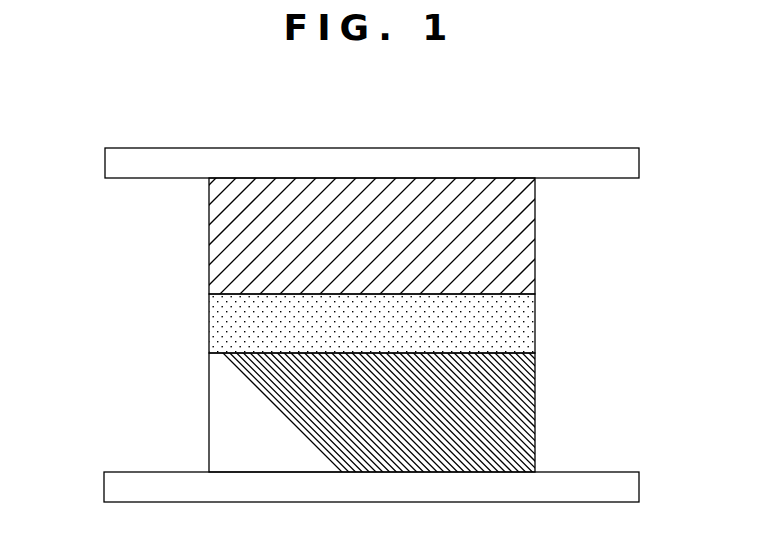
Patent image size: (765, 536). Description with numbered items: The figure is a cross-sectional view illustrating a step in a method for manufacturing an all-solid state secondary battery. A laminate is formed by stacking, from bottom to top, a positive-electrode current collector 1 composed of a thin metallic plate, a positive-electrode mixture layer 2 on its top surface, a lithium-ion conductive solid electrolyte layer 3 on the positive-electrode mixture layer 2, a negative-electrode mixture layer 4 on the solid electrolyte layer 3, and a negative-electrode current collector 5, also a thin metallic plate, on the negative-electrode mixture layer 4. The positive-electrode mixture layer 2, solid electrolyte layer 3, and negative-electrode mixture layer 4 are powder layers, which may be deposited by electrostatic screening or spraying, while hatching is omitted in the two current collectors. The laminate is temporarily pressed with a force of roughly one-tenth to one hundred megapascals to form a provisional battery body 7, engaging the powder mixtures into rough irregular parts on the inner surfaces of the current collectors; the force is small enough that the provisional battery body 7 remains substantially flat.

The positive-electrode current collector 1 is at (121, 487).
The positive-electrode mixture layer 2 is at (515, 413).
The solid electrolyte layer 3 is at (222, 324).
The negative-electrode mixture layer 4 is at (510, 237).
The negative-electrode current collector 5 is at (121, 163).
The provisional battery body 7 is at (662, 132).